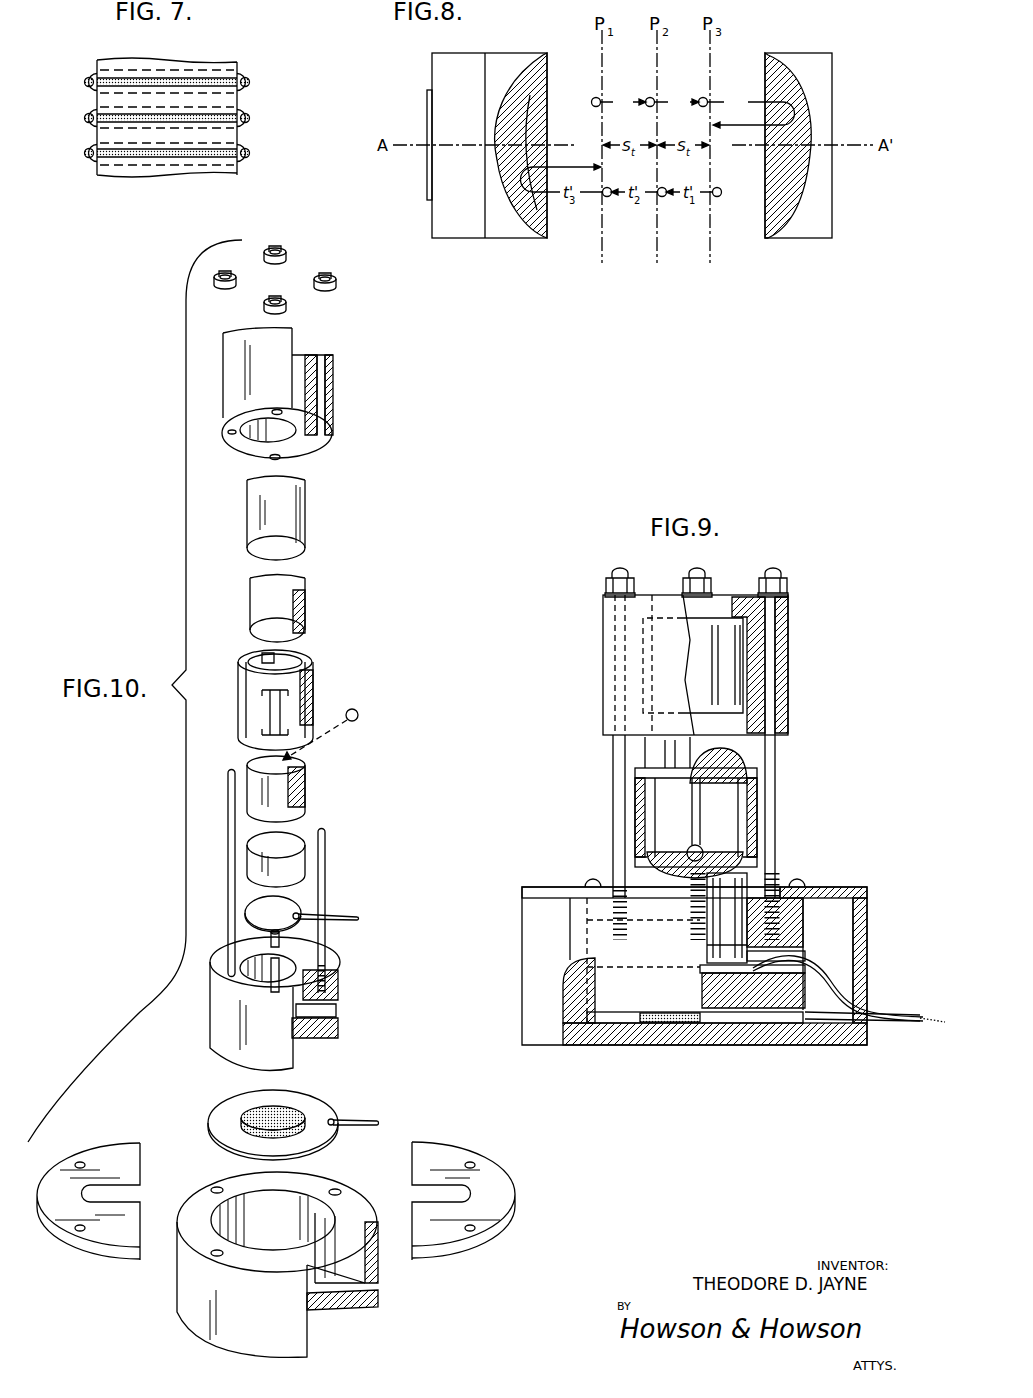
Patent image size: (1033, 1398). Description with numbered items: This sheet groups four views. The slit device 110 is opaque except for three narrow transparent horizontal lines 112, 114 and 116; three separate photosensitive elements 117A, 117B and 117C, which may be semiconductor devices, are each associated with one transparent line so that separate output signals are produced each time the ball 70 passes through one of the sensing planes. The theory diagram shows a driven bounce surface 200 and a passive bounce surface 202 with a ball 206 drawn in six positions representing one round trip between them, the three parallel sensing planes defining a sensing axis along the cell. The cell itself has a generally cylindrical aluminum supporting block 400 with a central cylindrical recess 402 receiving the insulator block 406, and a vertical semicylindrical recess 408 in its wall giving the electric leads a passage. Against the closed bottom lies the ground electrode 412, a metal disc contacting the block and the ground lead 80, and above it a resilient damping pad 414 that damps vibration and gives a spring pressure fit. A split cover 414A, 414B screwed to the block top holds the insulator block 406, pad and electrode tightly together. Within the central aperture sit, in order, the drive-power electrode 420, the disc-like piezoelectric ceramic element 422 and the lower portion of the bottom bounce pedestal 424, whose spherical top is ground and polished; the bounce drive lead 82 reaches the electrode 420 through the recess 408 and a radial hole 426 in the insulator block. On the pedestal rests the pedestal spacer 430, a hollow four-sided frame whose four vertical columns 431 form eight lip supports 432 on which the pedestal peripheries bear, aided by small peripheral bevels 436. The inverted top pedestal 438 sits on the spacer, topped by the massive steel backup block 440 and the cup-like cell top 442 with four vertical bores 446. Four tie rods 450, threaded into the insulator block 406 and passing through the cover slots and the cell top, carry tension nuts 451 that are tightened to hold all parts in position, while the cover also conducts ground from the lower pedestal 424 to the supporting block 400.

In FIG. 7, the slit device 110 is at (197, 68).
In FIG. 7, the transparent horizontal line 112 is at (251, 77).
In FIG. 7, the transparent horizontal line 114 is at (251, 114).
In FIG. 7, the transparent horizontal line 116 is at (251, 151).
In FIG. 7, the photosensitive element 117A is at (253, 86).
In FIG. 7, the photosensitive element 117B is at (253, 123).
In FIG. 7, the photosensitive element 117C is at (246, 161).
In FIG. 8, the driven bounce surface 200 is at (549, 58).
In FIG. 8, the passive bounce surface 202 is at (770, 76).
In FIG. 8, the ball 206 is at (595, 98).
In FIG. 9, the ball 70 is at (702, 847).
In FIG. 10, the ball 70 is at (358, 715).
In FIG. 9, the ground lead 80 is at (836, 1026).
In FIG. 10, the ground lead 80 is at (377, 1121).
In FIG. 9, the bounce drive lead 82 is at (824, 979).
In FIG. 10, the bounce drive lead 82 is at (355, 920).
In FIG. 9, the supporting block 400 is at (633, 1038).
In FIG. 10, the supporting block 400 is at (183, 1297).
In FIG. 9, the central cylindrical recess 402 is at (593, 990).
In FIG. 10, the central cylindrical recess 402 is at (240, 1198).
In FIG. 9, the insulator block 406 is at (615, 1000).
In FIG. 10, the insulator block 406 is at (217, 1030).
In FIG. 9, the semicylindrical recess 408 is at (830, 907).
In FIG. 10, the semicylindrical recess 408 is at (353, 1217).
In FIG. 9, the ground electrode 412 is at (767, 1024).
In FIG. 10, the ground electrode 412 is at (323, 1108).
In FIG. 9, the damping pad 414 is at (680, 1012).
In FIG. 10, the damping pad 414 is at (247, 1113).
In FIG. 9, the split cover 414A is at (545, 893).
In FIG. 10, the split cover 414A is at (106, 1153).
In FIG. 9, the split cover 414B is at (858, 887).
In FIG. 10, the split cover 414B is at (497, 1174).
In FIG. 9, the drive-power electrode 420 is at (700, 973).
In FIG. 10, the drive-power electrode 420 is at (295, 900).
In FIG. 9, the piezoelectric ceramic element 422 is at (716, 953).
In FIG. 10, the piezoelectric ceramic element 422 is at (306, 846).
In FIG. 9, the bottom bounce pedestal 424 is at (717, 903).
In FIG. 10, the bottom bounce pedestal 424 is at (308, 795).
In FIG. 9, the radial hole 426 is at (802, 961).
In FIG. 10, the radial hole 426 is at (337, 1010).
In FIG. 9, the pedestal spacer 430 is at (758, 792).
In FIG. 10, the pedestal spacer 430 is at (243, 723).
In FIG. 9, the vertical column 431 is at (647, 830).
In FIG. 10, the vertical column 431 is at (314, 680).
In FIG. 9, the lip support 432 is at (640, 788).
In FIG. 10, the lip support 432 is at (270, 657).
In FIG. 9, the peripheral bevel 436 is at (765, 778).
In FIG. 10, the peripheral bevel 436 is at (253, 768).
In FIG. 9, the top pedestal 438 is at (653, 758).
In FIG. 10, the top pedestal 438 is at (249, 600).
In FIG. 9, the backup block 440 is at (706, 696).
In FIG. 10, the backup block 440 is at (308, 530).
In FIG. 9, the cell top 442 is at (606, 651).
In FIG. 10, the cell top 442 is at (388, 411).
In FIG. 9, the bore 446 is at (772, 657).
In FIG. 10, the bore 446 is at (326, 422).
In FIG. 9, the tie rod 450 is at (778, 745).
In FIG. 10, the tie rod 450 is at (326, 834).
In FIG. 9, the tension nut 451 is at (605, 577).
In FIG. 10, the tension nut 451 is at (325, 276).